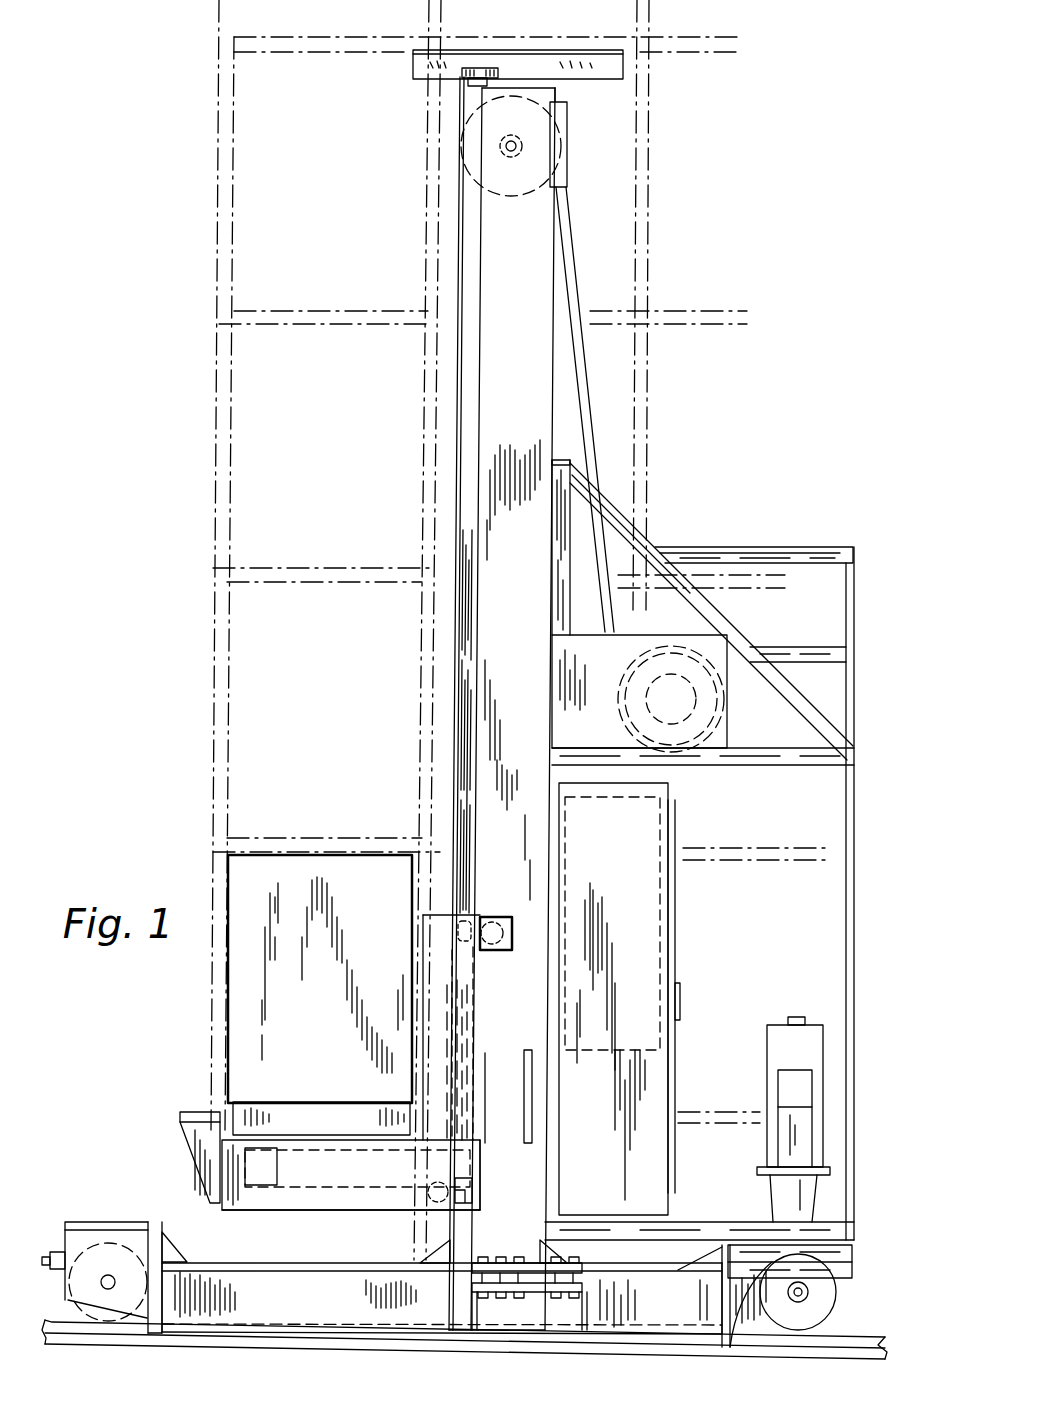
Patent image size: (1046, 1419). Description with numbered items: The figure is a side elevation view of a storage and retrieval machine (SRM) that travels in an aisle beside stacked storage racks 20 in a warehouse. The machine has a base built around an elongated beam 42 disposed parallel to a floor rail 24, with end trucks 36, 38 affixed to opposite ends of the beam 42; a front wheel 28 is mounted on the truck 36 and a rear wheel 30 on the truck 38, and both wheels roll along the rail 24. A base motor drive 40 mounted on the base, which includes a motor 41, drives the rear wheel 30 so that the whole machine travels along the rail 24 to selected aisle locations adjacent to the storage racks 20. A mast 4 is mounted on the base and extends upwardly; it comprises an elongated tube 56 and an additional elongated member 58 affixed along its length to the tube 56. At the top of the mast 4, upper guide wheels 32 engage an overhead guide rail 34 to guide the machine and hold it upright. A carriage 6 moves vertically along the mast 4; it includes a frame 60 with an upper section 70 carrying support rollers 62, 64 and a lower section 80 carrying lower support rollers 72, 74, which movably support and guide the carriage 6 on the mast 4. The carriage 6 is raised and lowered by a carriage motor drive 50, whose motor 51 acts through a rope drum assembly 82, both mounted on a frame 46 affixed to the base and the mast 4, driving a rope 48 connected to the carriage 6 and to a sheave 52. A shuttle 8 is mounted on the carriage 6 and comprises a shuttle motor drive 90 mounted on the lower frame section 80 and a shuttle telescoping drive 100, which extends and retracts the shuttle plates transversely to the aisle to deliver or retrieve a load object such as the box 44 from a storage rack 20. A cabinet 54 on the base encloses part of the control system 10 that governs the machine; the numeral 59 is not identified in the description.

The mast 4 is at (530, 235).
The carriage 6 is at (153, 1153).
The shuttle 8 is at (310, 1128).
The control system 10 is at (598, 863).
The stacked storage racks 20 is at (704, 311).
The rail 24 is at (848, 1346).
The front wheel 28 is at (97, 1318).
The rear wheel 30 is at (812, 1292).
The upper guide wheels 32 is at (462, 75).
The guide rail 34 is at (613, 66).
The end truck 36 is at (840, 1253).
The end truck 38 is at (138, 1222).
The base motor drive 40 is at (704, 1043).
The motor 41 is at (779, 1026).
The elongated beam 42 is at (342, 1290).
The box 44 is at (232, 870).
The frame 46 is at (812, 763).
The rope 48 is at (452, 362).
The carriage motor drive 50 is at (576, 732).
The motor 51 is at (727, 712).
The sheave 52 is at (568, 120).
The cabinet 54 is at (676, 830).
The elongated tube 56 is at (456, 436).
The additional elongated member 58 is at (563, 273).
The load 59 is at (370, 1013).
The frame 60 is at (331, 1212).
The support roller 62 is at (481, 916).
The support roller 64 is at (495, 948).
The upper section 70 is at (424, 929).
The lower support roller 72 is at (450, 1186).
The lower support roller 74 is at (474, 1197).
The lower section 80 is at (262, 1210).
The rope drum assembly 82 is at (737, 635).
The shuttle motor drive 90 is at (302, 1175).
The shuttle telescoping drive 100 is at (325, 1093).